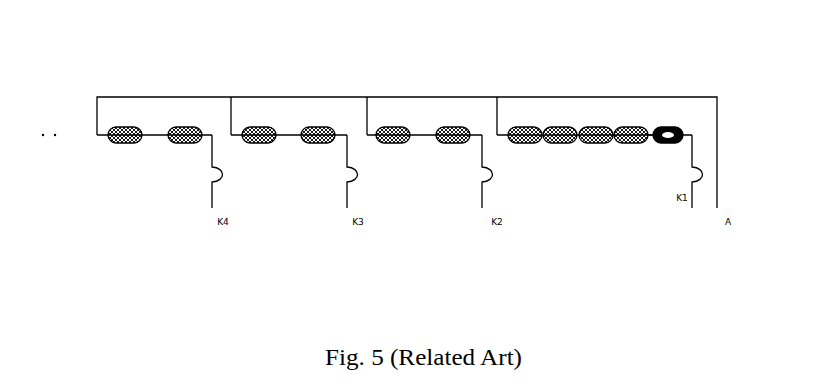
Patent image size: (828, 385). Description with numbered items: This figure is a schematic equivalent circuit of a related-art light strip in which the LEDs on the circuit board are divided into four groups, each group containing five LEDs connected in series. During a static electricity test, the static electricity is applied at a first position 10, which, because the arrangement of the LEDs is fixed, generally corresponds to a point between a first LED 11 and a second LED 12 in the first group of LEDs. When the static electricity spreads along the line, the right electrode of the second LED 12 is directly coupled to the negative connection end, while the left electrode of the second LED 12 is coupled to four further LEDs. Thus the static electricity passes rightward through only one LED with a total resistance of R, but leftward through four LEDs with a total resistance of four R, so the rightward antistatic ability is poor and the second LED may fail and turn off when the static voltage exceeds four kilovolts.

The first position 10 is at (649, 130).
The first LED 11 is at (630, 142).
The second LED 12 is at (658, 143).